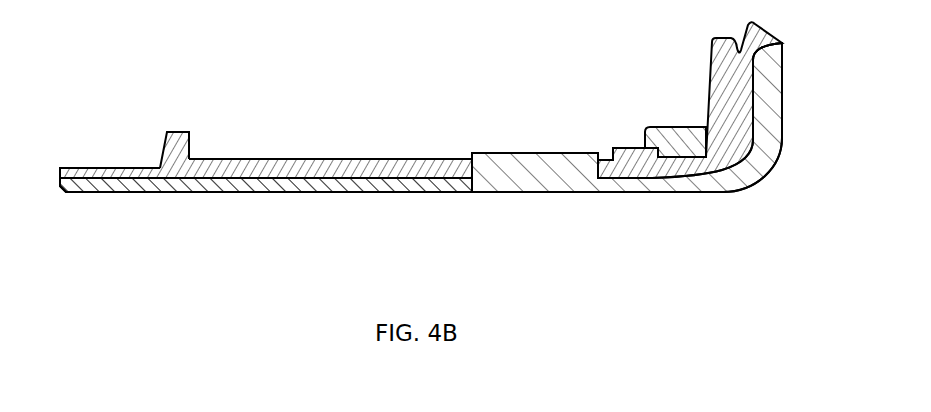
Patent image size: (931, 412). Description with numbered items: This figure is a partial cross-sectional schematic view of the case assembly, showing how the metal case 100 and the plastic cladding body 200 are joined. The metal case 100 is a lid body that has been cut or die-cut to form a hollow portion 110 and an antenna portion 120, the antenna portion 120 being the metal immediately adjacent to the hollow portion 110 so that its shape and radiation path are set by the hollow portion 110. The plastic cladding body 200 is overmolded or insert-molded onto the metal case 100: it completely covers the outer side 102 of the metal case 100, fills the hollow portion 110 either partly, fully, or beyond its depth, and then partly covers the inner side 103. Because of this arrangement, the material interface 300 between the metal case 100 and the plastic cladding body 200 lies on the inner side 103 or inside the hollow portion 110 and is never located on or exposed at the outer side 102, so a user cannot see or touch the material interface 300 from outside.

The metal case 100 is at (191, 142).
The outer side 102 is at (400, 193).
The inner side 103 is at (375, 159).
The hollow portion 110 is at (527, 152).
The antenna portion 120 is at (757, 100).
The plastic cladding body 200 is at (707, 72).
The material interface 300 is at (483, 153).